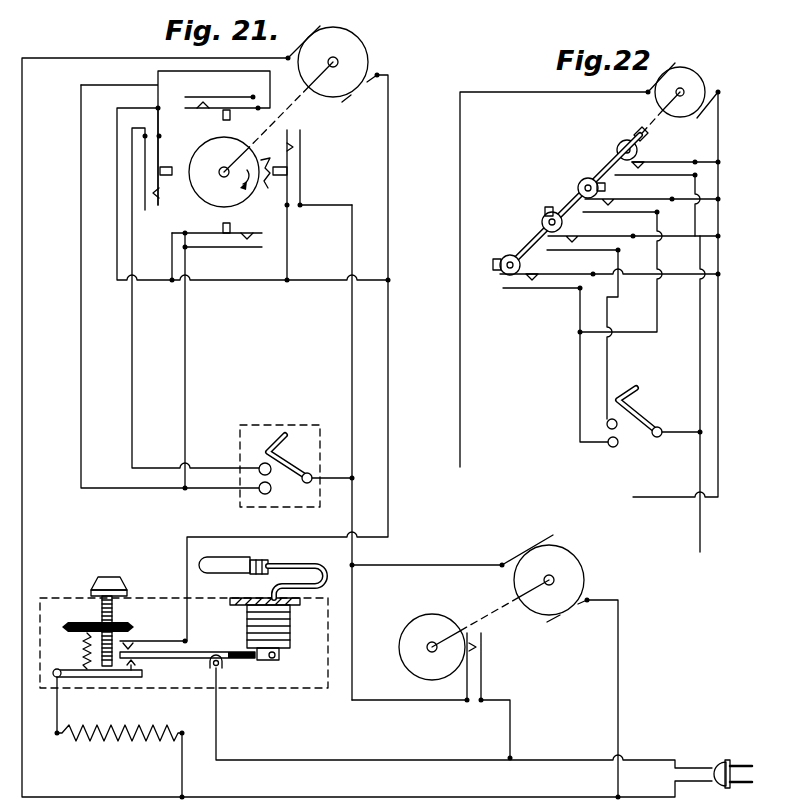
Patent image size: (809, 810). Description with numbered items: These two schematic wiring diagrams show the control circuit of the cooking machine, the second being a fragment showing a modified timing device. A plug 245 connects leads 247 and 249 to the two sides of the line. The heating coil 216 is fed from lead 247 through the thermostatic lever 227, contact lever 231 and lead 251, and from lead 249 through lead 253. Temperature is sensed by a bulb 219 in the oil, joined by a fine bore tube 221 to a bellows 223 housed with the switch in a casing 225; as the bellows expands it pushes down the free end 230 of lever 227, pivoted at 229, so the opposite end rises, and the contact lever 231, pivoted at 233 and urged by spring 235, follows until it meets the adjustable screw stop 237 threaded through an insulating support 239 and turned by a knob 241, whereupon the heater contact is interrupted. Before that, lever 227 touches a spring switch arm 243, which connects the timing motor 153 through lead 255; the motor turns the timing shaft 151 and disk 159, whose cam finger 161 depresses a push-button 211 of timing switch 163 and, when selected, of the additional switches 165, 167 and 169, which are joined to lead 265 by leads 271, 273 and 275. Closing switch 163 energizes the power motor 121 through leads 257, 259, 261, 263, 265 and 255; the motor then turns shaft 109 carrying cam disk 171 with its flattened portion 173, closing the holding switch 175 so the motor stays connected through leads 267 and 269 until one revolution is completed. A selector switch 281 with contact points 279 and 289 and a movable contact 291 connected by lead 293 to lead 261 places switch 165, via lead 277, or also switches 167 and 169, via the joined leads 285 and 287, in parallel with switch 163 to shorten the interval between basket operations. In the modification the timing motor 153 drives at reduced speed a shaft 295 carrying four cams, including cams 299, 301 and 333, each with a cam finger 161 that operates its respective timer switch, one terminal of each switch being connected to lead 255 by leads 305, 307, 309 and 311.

In FIG. 21, the shaft 109 is at (432, 647).
In FIG. 21, the power motor 121 is at (585, 578).
In FIG. 21, the timing shaft 151 is at (224, 172).
In FIG. 21, the timing motor 153 is at (371, 62).
In FIG. 22, the timing motor 153 is at (704, 78).
In FIG. 21, the disk 159 is at (215, 197).
In FIG. 21, the cam finger 161 is at (265, 176).
In FIG. 22, the cam finger 161 is at (510, 272).
In FIG. 21, the timing switch 163 is at (300, 172).
In FIG. 22, the timing switch 163 is at (673, 162).
In FIG. 21, the additional control switch 165 is at (156, 154).
In FIG. 22, the additional control switch 165 is at (600, 212).
In FIG. 21, the additional control switch 167 is at (235, 108).
In FIG. 22, the additional control switch 167 is at (642, 205).
In FIG. 21, the additional control switch 169 is at (233, 240).
In FIG. 22, the additional control switch 169 is at (550, 289).
In FIG. 21, the cam disk 171 is at (399, 640).
In FIG. 21, the flattened portion 173 is at (463, 652).
In FIG. 21, the motor holding switch 175 is at (482, 669).
In FIG. 21, the push-button 211 is at (274, 163).
In FIG. 21, the resistance heating coil 216 is at (144, 726).
In FIG. 21, the bulb 219 is at (217, 573).
In FIG. 21, the fine bore tube 221 is at (320, 565).
In FIG. 21, the bellows 223 is at (290, 633).
In FIG. 21, the casing 225 is at (305, 689).
In FIG. 21, the lever 227 is at (185, 659).
In FIG. 21, the pivot 229 is at (224, 668).
In FIG. 21, the free end of lever 230 is at (281, 655).
In FIG. 21, the contact lever 231 is at (110, 677).
In FIG. 21, the pivot end 233 is at (80, 668).
In FIG. 21, the spring 235 is at (84, 637).
In FIG. 21, the adjustable stop 237 is at (118, 615).
In FIG. 21, the insulating support 239 is at (93, 618).
In FIG. 21, the knob 241 is at (119, 578).
In FIG. 21, the spring switch arm 243 is at (158, 637).
In FIG. 21, the plug 245 is at (718, 763).
In FIG. 21, the lead 247 is at (217, 726).
In FIG. 21, the lead 249 is at (118, 58).
In FIG. 22, the lead 249 is at (512, 92).
In FIG. 21, the lead 251 is at (58, 710).
In FIG. 21, the lead 253 is at (181, 760).
In FIG. 21, the lead 255 is at (389, 400).
In FIG. 22, the lead 255 is at (719, 408).
In FIG. 21, the lead 257 is at (620, 677).
In FIG. 21, the lead 259 is at (449, 565).
In FIG. 21, the lead 261 is at (351, 385).
In FIG. 22, the lead 261 is at (699, 346).
In FIG. 21, the lead 263 is at (288, 242).
In FIG. 21, the lead 265 is at (116, 216).
In FIG. 21, the lead 267 is at (420, 701).
In FIG. 21, the lead 269 is at (511, 724).
In FIG. 21, the lead 271 is at (166, 127).
In FIG. 21, the lead 273 is at (218, 71).
In FIG. 21, the lead 275 is at (170, 253).
In FIG. 21, the lead 277 is at (132, 372).
In FIG. 22, the lead 277 is at (612, 355).
In FIG. 21, the contact point 279 is at (256, 466).
In FIG. 22, the contact point 279 is at (606, 424).
In FIG. 21, the selector switch 281 is at (259, 424).
In FIG. 21, the lead 285 is at (80, 398).
In FIG. 22, the lead 285 is at (658, 317).
In FIG. 21, the lead 287 is at (188, 350).
In FIG. 22, the lead 287 is at (579, 366).
In FIG. 21, the contact point 289 is at (258, 492).
In FIG. 22, the contact point 289 is at (611, 448).
In FIG. 21, the movable contact 291 is at (286, 478).
In FIG. 22, the movable contact 291 is at (645, 418).
In FIG. 21, the lead 293 is at (332, 480).
In FIG. 22, the lead 293 is at (676, 436).
In FIG. 22, the shaft 295 is at (617, 158).
In FIG. 22, the cam 299 is at (580, 184).
In FIG. 22, the cam 301 is at (543, 226).
In FIG. 22, the lead 305 is at (720, 182).
In FIG. 22, the lead 307 is at (720, 218).
In FIG. 22, the lead 309 is at (675, 240).
In FIG. 22, the lead 311 is at (675, 278).
In FIG. 22, the cam 333 is at (506, 255).